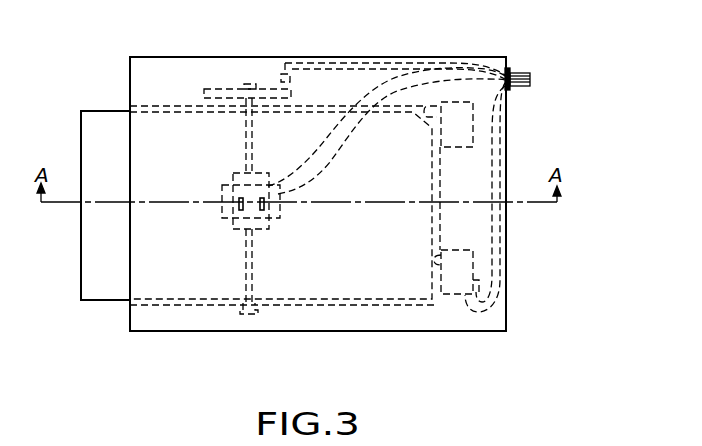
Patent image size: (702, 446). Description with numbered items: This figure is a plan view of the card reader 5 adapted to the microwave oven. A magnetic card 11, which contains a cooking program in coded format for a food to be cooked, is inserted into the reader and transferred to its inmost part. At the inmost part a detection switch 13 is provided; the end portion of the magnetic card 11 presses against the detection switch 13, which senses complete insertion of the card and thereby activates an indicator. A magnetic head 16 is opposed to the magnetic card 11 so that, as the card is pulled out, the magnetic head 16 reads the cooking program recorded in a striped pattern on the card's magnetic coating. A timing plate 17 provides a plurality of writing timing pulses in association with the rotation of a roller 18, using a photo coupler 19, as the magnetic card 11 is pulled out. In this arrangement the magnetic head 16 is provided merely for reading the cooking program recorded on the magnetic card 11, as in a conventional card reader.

The card reader 5 is at (213, 338).
The magnetic card 11 is at (103, 296).
The detection switch 13 is at (458, 272).
The magnetic head 16 is at (275, 216).
The timing plate 17 is at (218, 89).
The roller 18 is at (244, 198).
The photo coupler 19 is at (290, 80).